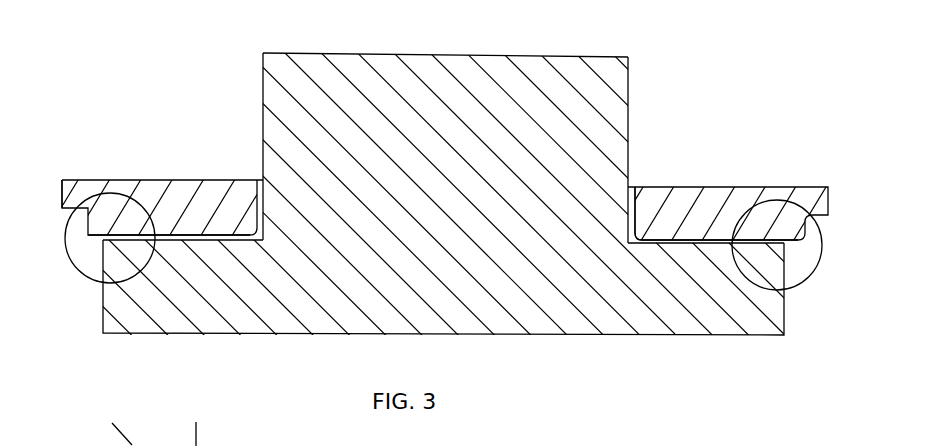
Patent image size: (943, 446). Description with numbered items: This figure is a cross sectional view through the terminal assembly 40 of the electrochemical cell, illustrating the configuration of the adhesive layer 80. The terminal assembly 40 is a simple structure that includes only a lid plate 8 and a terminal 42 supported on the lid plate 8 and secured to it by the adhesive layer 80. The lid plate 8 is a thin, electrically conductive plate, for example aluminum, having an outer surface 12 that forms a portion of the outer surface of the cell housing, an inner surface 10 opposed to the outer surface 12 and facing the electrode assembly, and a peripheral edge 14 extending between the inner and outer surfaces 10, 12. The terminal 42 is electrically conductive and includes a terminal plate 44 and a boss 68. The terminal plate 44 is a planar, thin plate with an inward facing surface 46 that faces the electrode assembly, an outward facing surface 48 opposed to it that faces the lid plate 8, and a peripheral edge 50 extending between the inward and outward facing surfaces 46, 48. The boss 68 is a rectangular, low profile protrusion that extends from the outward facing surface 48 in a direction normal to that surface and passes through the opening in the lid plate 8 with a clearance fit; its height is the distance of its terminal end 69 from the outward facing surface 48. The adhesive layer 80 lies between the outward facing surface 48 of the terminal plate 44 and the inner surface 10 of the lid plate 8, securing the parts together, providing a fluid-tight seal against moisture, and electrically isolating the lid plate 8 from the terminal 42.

The terminal assembly 40 is at (449, 199).
The terminal 42 is at (283, 117).
The boss 68 is at (607, 118).
The terminal end 69 is at (541, 53).
The inward facing surface 46 is at (571, 337).
The inner surface 10 is at (198, 242).
The adhesive layer 80 is at (222, 247).
The outer surface 12 is at (180, 180).
The peripheral edge 14 is at (58, 200).
The lid plate 8 is at (710, 200).
The outward facing surface 48 is at (672, 222).
The peripheral edge 50 is at (103, 310).
The terminal plate 44 is at (715, 307).